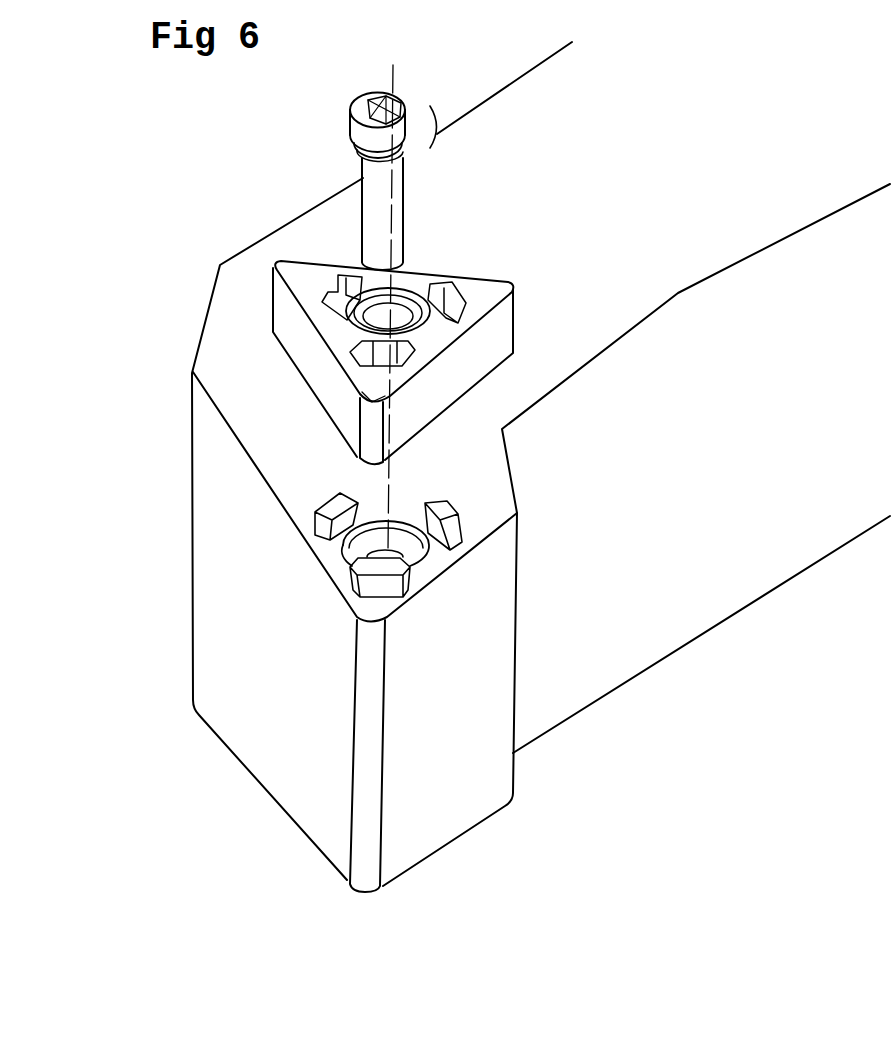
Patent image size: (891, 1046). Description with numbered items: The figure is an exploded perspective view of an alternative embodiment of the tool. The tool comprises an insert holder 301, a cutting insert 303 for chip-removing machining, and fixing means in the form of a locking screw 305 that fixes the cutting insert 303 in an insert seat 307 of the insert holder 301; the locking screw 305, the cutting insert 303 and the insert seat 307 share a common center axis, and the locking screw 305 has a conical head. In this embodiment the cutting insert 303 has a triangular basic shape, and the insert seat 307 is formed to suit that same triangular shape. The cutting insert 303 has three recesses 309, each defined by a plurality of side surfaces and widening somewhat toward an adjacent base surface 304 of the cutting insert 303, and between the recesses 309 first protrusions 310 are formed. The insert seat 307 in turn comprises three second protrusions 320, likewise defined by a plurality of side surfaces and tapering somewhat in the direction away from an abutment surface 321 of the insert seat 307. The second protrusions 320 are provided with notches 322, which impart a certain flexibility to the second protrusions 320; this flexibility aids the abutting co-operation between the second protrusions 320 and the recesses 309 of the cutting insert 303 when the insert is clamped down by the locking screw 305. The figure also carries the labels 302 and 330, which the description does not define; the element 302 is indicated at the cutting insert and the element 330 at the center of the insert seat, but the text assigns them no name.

The insert holder 301 is at (225, 253).
The cutting insert 302 is at (300, 258).
The cutting insert 303 is at (380, 327).
The base surface 304 is at (367, 380).
The locking screw 305 is at (358, 160).
The insert seat 307 is at (315, 495).
The recesses 309 is at (322, 300).
The first protrusions 310 is at (335, 335).
The second protrusions 320 is at (463, 506).
The abutment surface 321 is at (337, 564).
The notches 322 is at (348, 574).
The threaded bore of holder 330 is at (353, 548).